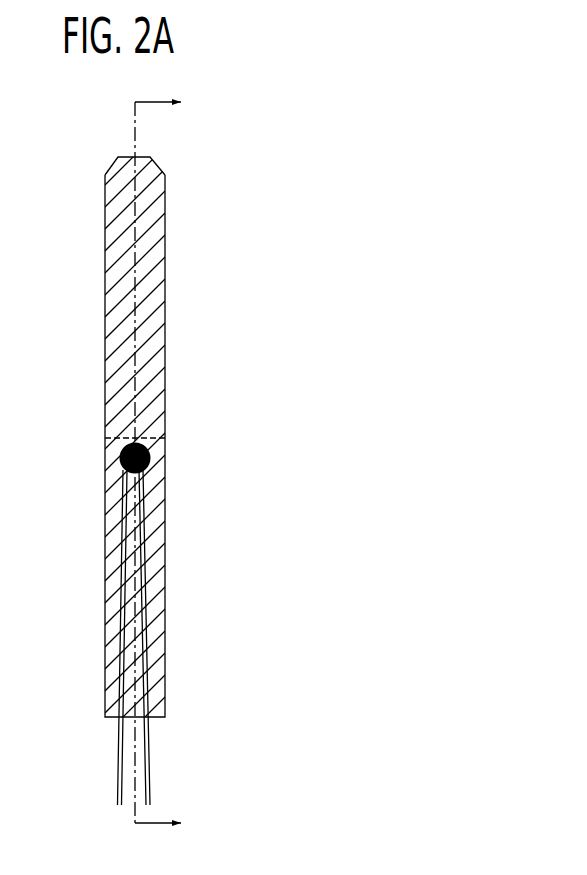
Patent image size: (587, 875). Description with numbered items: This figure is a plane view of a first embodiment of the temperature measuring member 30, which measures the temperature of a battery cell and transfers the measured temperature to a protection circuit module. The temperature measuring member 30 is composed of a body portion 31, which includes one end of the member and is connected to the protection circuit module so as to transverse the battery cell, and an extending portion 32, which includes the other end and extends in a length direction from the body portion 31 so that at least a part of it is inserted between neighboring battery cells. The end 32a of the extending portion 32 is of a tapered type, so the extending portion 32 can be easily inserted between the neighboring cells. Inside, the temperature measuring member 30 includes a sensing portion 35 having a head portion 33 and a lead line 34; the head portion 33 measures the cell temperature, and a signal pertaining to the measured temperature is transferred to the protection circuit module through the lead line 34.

The temperature measuring member 30 is at (181, 447).
The body portion 31 is at (97, 438).
The extending portion 32 is at (97, 157).
The end of the extending portion 32a is at (161, 167).
The head portion 33 is at (150, 462).
The lead line 34 is at (118, 751).
The sensing portion 35 is at (241, 542).